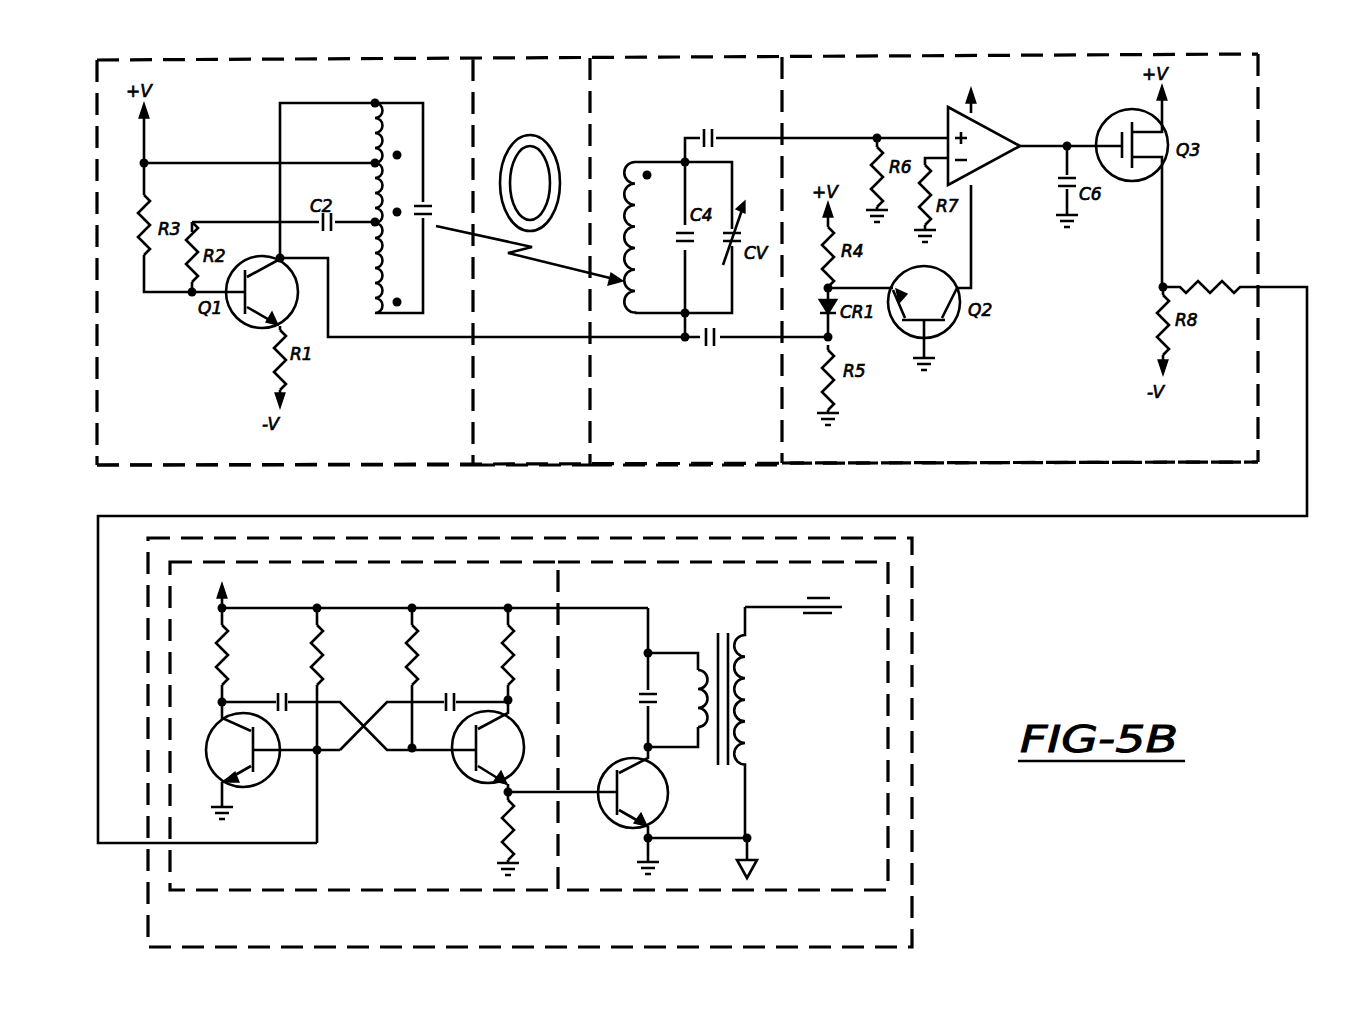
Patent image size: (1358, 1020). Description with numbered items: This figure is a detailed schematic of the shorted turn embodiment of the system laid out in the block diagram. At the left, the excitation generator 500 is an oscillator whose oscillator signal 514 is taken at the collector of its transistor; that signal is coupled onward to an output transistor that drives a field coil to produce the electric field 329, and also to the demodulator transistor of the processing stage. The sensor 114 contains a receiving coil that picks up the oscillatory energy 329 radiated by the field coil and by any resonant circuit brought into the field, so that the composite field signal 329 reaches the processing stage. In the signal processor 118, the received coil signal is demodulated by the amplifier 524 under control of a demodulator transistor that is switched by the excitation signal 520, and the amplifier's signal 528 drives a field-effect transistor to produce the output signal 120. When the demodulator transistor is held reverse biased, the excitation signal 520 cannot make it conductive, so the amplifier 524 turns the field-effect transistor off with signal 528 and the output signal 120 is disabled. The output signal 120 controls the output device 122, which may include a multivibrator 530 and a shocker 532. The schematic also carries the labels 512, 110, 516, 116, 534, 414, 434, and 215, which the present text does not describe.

The excitation generator 500 is at (310, 468).
The transformer 512 is at (408, 98).
The key 110 is at (525, 135).
The electric field 329 is at (552, 271).
The sensor 114 is at (690, 467).
The sensing coil L4 516 is at (655, 157).
The sensor output line 116 is at (774, 142).
The oscillator signal 514 is at (666, 344).
The excitation signal 520 is at (730, 340).
The signal processor 118 is at (987, 467).
The amplifier 524 is at (946, 106).
The signal 528 is at (1060, 144).
The output signal 120 is at (1307, 490).
The output device 122 is at (534, 946).
The multivibrator 530 is at (377, 889).
The shocker 532 is at (727, 888).
The switching transistor Q6 534 is at (580, 790).
The electrode terminal 414 is at (847, 612).
The ground return electrode line 434 is at (722, 856).
The electrode 215 is at (767, 858).